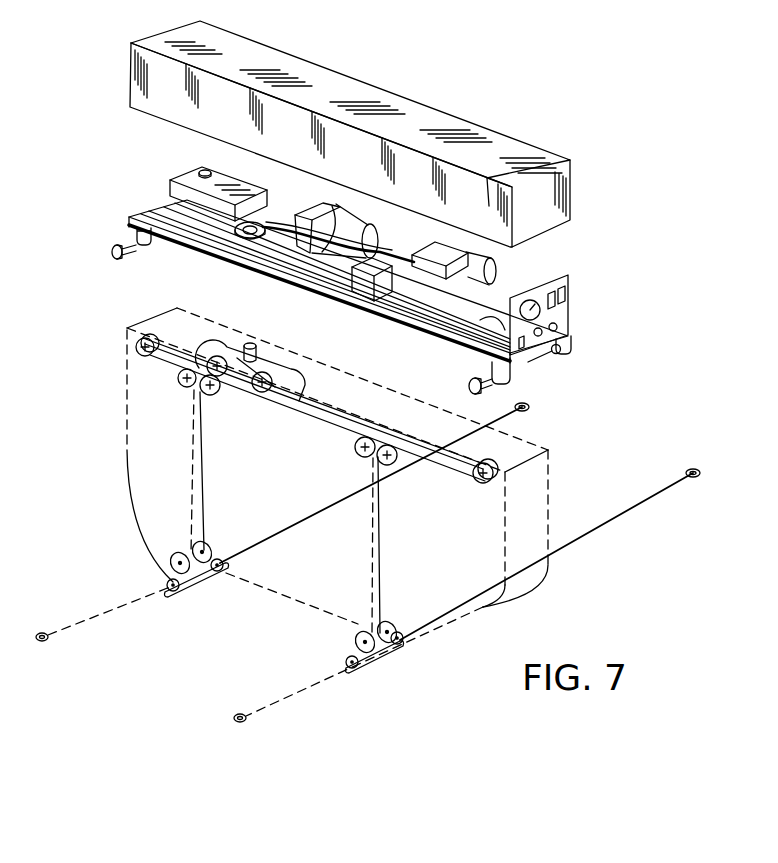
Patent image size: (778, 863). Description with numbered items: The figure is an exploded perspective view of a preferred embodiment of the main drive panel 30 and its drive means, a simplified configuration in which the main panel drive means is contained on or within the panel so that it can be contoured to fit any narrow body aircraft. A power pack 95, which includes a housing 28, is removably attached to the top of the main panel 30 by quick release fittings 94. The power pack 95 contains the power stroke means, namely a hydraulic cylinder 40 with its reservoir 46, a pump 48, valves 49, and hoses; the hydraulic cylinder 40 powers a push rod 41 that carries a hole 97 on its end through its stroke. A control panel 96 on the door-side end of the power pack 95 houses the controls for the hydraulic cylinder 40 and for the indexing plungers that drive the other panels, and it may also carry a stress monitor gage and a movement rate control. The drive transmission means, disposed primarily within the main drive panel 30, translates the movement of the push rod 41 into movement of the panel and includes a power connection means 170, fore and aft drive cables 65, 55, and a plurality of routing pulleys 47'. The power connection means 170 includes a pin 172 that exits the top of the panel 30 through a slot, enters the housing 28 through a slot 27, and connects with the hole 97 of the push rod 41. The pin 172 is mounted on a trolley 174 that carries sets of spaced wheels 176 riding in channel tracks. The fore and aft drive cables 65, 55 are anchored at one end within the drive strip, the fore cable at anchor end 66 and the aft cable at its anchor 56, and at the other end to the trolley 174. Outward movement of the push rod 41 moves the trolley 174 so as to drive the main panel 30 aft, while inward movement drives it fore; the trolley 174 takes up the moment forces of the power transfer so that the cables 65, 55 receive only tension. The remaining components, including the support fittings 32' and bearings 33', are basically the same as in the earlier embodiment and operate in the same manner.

The slot 27 is at (232, 48).
The housing 28 is at (182, 200).
The main drive panel 30 is at (80, 354).
The support fittings 32' is at (302, 619).
The bearings 33' is at (270, 627).
The hydraulic cylinder 40 is at (432, 303).
The push rod 41 is at (265, 250).
The reservoir 46 is at (204, 170).
The routing pulleys 47' is at (284, 515).
The pump 48 is at (346, 208).
The valves 49 is at (474, 248).
The aft drive cable 55 is at (392, 420).
The anchor ring 56 is at (526, 411).
The fore drive cable 65 is at (172, 366).
The anchored end of fore drive cable 66 is at (46, 642).
The quick release fittings 94 is at (110, 253).
The power pack 95 is at (582, 156).
The control panel 96 is at (583, 292).
The hole 97 is at (242, 242).
The power connection means 170 is at (325, 368).
The pin 172 is at (255, 344).
The trolley 174 is at (285, 365).
The spaced wheels 176 is at (222, 344).